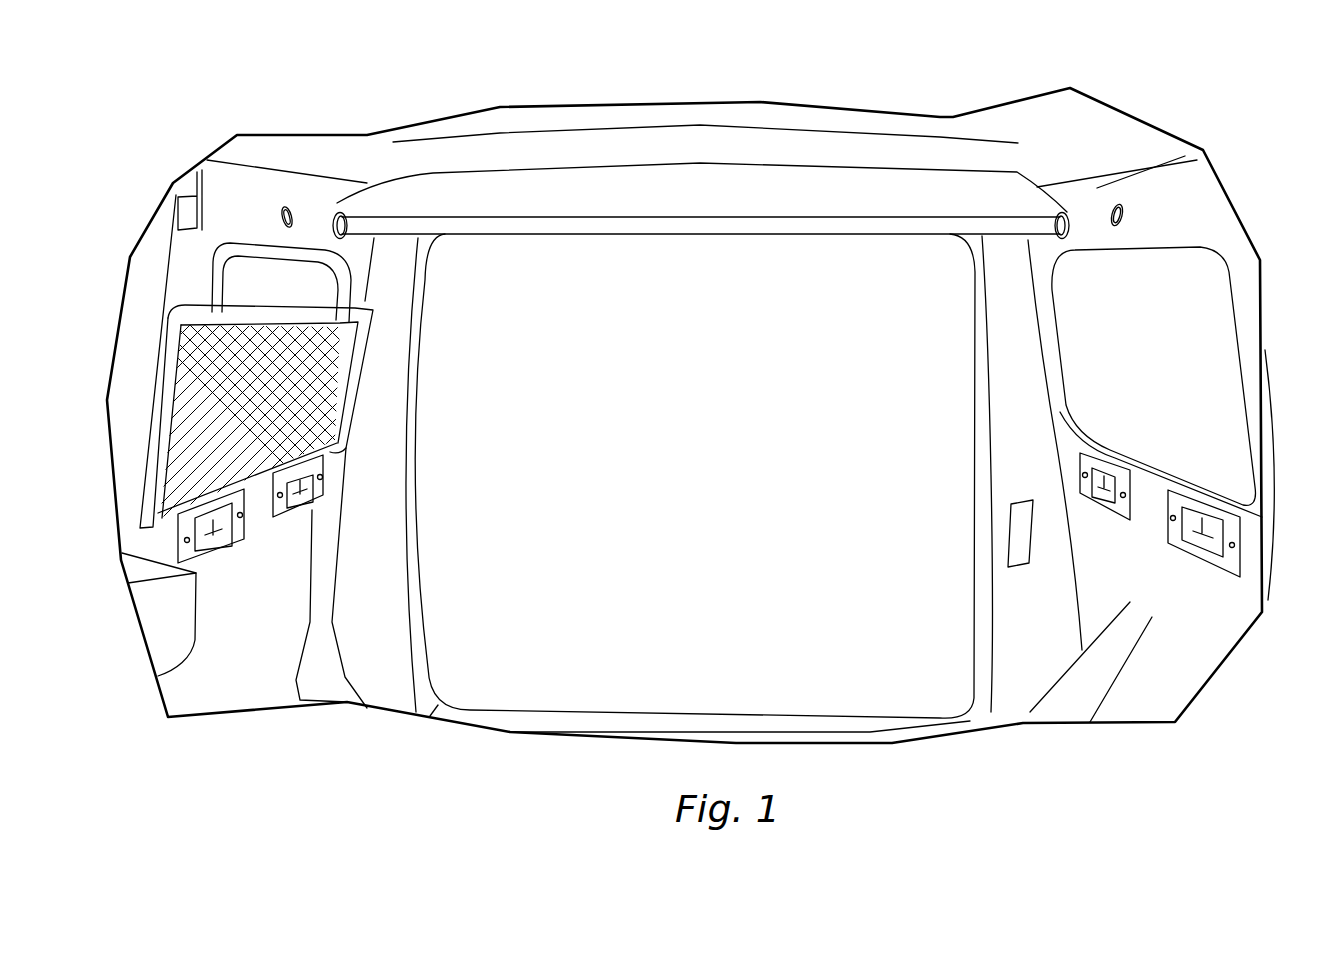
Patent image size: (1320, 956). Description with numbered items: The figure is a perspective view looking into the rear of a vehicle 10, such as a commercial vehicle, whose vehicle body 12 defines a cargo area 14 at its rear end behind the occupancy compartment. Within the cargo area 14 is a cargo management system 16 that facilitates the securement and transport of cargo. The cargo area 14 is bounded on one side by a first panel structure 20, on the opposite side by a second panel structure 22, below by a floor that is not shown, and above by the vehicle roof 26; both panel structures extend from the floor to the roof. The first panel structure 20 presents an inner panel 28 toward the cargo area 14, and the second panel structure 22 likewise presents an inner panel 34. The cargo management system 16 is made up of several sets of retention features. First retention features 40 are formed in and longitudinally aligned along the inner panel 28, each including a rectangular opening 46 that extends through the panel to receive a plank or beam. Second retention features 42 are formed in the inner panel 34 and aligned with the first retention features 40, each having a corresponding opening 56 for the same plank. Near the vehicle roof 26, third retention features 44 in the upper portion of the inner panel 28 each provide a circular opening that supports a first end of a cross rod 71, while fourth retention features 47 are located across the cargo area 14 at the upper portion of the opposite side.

The vehicle 10 is at (1234, 131).
The vehicle body 12 is at (1145, 698).
The cargo area 14 is at (548, 303).
The cargo management system 16 is at (233, 216).
The first panel structure 20 is at (1192, 622).
The second panel structure 22 is at (167, 647).
The vehicle roof 26 is at (655, 180).
The inner panel 28 is at (1192, 655).
The inner panel 34 is at (233, 640).
The first retention features 40 is at (1115, 456).
The second retention features 42 is at (262, 478).
The third retention features 44 is at (1079, 214).
The opening 46 is at (1107, 490).
The fourth retention features 47 is at (334, 221).
The opening 56 is at (215, 527).
The cross rod 71 is at (807, 227).